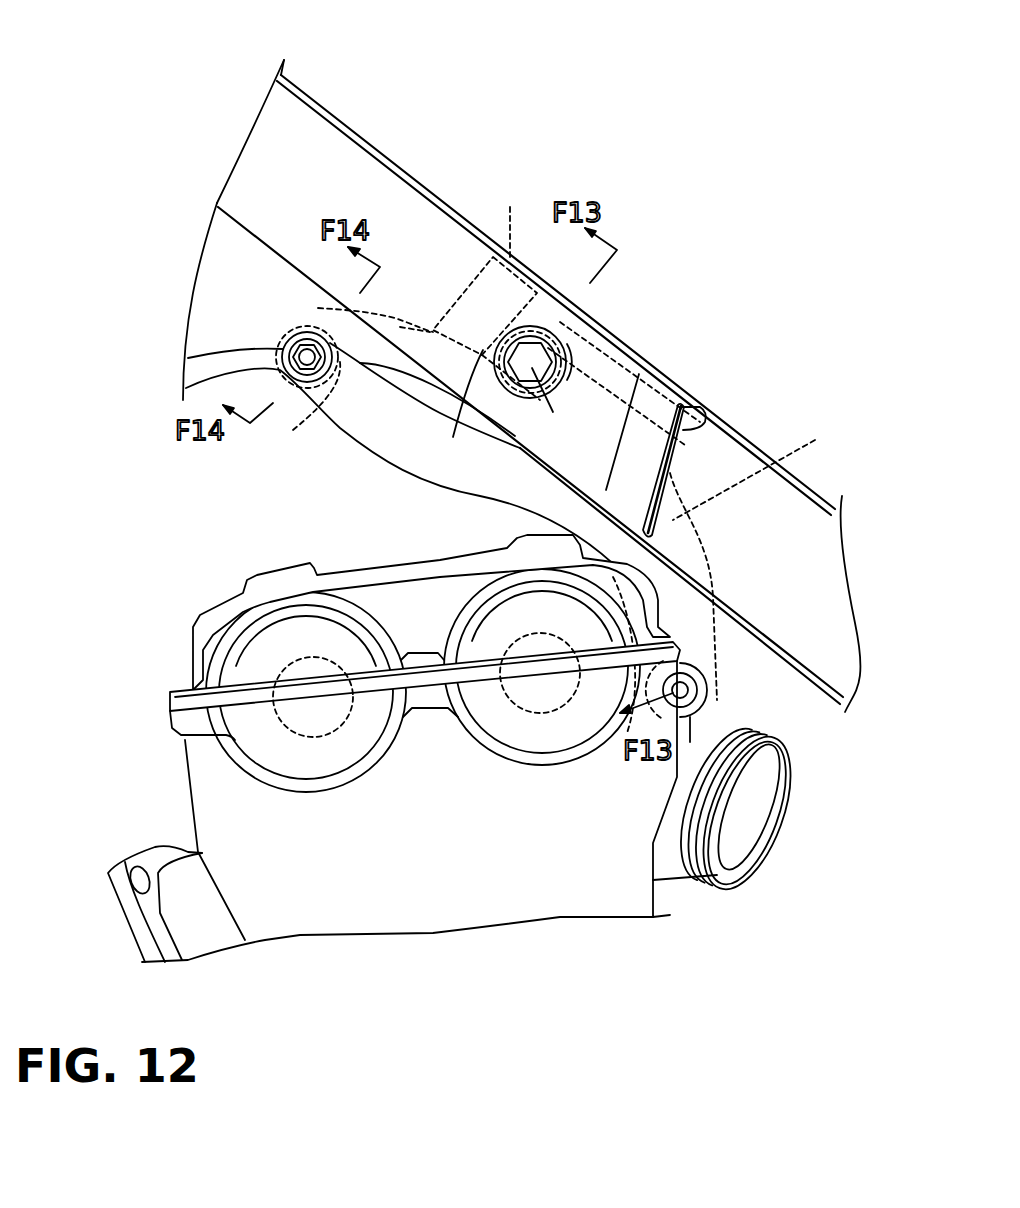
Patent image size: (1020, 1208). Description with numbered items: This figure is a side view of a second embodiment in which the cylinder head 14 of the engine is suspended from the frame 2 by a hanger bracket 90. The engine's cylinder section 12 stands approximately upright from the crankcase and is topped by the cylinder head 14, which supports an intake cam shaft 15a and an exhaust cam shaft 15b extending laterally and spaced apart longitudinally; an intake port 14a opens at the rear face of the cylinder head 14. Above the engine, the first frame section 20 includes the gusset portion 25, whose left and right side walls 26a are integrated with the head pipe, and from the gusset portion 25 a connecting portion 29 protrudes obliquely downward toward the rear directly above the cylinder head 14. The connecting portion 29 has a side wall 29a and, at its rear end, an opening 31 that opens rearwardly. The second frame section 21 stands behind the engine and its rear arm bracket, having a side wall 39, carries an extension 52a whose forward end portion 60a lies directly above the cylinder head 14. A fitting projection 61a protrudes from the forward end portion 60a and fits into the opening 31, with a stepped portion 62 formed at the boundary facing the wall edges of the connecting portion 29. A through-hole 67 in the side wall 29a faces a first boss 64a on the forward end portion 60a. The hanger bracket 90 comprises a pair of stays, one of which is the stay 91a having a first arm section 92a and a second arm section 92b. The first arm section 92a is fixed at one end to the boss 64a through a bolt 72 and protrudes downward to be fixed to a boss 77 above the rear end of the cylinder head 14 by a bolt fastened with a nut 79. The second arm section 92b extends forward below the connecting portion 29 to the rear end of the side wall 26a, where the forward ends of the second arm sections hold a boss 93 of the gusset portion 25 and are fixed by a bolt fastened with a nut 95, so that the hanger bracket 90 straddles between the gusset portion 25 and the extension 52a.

The frame 2 is at (398, 95).
The cylinder section 12 is at (193, 660).
The cylinder head 14 is at (437, 917).
The intake port 14a is at (763, 808).
The intake cam shaft 15a is at (543, 713).
The exhaust cam shaft 15b is at (313, 737).
The first frame section 20 is at (313, 97).
The second frame section 21 is at (827, 483).
The gusset portion 25 is at (247, 152).
The side wall 26a is at (200, 280).
The connecting portion 29 is at (427, 193).
The side wall 29a is at (455, 412).
The opening 31 is at (683, 428).
The side wall 39 is at (827, 538).
The extension 52a is at (727, 450).
The forward end portion 60a is at (477, 278).
The fitting projection 61a is at (347, 312).
The stepped portion 62 is at (512, 215).
The first boss 64a is at (547, 350).
The through-hole 67 is at (557, 383).
The bolt 72 is at (547, 355).
The boss 77 is at (700, 655).
The nut 79 is at (693, 693).
The hanger bracket 90 is at (403, 477).
The stay 91a is at (487, 497).
The first arm section 92a is at (739, 574).
The second arm section 92b is at (380, 433).
The boss 93 is at (300, 423).
The nut 95 is at (287, 350).